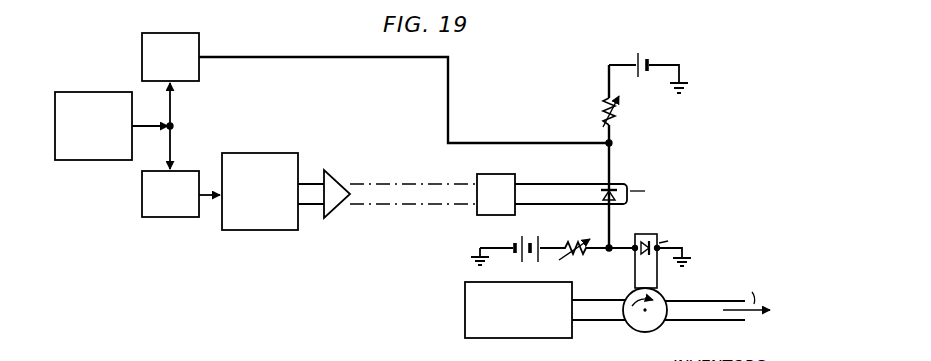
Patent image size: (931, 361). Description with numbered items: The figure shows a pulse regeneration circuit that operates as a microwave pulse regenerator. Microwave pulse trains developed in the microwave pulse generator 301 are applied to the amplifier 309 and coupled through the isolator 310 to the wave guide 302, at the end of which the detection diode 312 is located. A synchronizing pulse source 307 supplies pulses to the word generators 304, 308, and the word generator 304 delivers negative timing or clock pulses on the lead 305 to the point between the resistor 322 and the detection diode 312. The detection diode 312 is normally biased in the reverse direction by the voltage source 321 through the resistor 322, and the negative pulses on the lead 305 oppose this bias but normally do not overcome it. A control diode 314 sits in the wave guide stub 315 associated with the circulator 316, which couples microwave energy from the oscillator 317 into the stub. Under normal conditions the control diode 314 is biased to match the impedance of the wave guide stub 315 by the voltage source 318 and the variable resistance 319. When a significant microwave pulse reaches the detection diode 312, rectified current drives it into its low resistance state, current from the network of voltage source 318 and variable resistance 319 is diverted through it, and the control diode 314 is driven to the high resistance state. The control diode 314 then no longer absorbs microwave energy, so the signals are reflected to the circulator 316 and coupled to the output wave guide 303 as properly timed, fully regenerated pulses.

The microwave pulse generator 301 is at (260, 153).
The wave guide 302 is at (538, 184).
The output wave guide 303 is at (700, 321).
The word generator 304 is at (199, 38).
The lead 305 is at (313, 57).
The synchronizing pulse source 307 is at (72, 92).
The word generator 308 is at (185, 171).
The amplifier 309 is at (333, 180).
The isolator 310 is at (485, 176).
The detection diode 312 is at (615, 189).
The control diode 314 is at (643, 246).
The wave guide stub 315 is at (641, 276).
The circulator 316 is at (653, 324).
The oscillator 317 is at (478, 324).
The voltage source 318 is at (523, 240).
The variable resistance 319 is at (563, 240).
The voltage source 321 is at (648, 58).
The resistor 322 is at (622, 108).